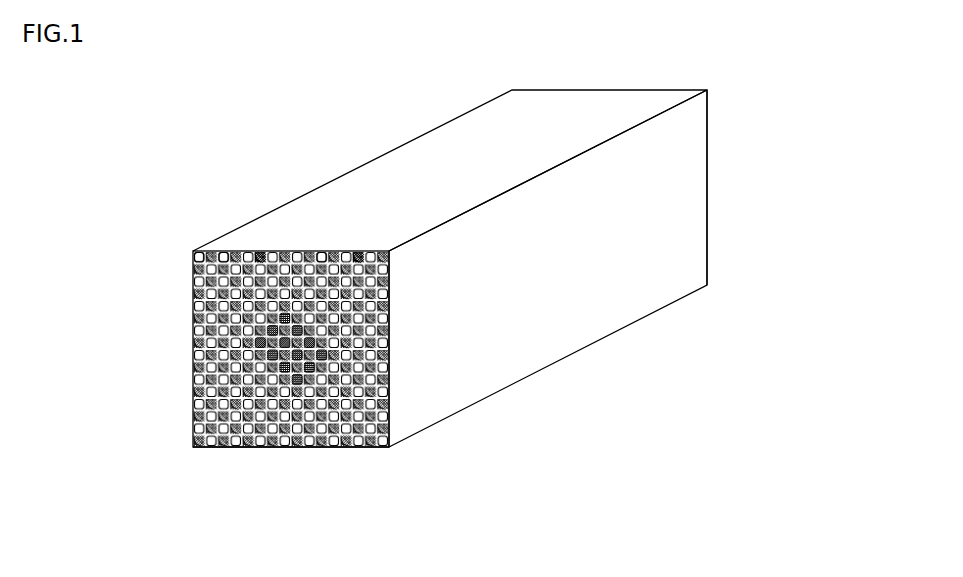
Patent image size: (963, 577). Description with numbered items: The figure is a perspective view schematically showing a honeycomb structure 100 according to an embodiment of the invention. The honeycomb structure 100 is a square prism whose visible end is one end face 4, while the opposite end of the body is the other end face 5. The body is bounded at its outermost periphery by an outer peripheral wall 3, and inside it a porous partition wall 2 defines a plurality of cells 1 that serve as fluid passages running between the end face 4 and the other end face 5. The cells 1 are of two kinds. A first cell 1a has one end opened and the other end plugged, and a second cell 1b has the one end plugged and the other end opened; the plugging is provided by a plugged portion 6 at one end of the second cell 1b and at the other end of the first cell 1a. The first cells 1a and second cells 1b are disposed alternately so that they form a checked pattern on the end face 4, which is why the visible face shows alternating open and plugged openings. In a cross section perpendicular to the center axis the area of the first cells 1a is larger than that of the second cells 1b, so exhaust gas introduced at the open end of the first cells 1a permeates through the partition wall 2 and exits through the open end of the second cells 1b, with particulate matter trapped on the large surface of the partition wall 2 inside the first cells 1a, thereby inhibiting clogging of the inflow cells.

The honeycomb structure 100 is at (848, 67).
The cell 1 is at (196, 251).
The first cell 1a is at (225, 251).
The second cell 1b is at (262, 251).
The partition wall 2 is at (319, 251).
The outer peripheral wall 3 is at (443, 407).
The one end face 4 is at (272, 447).
The the other end face 5 is at (707, 262).
The plugged portion 6 is at (358, 251).